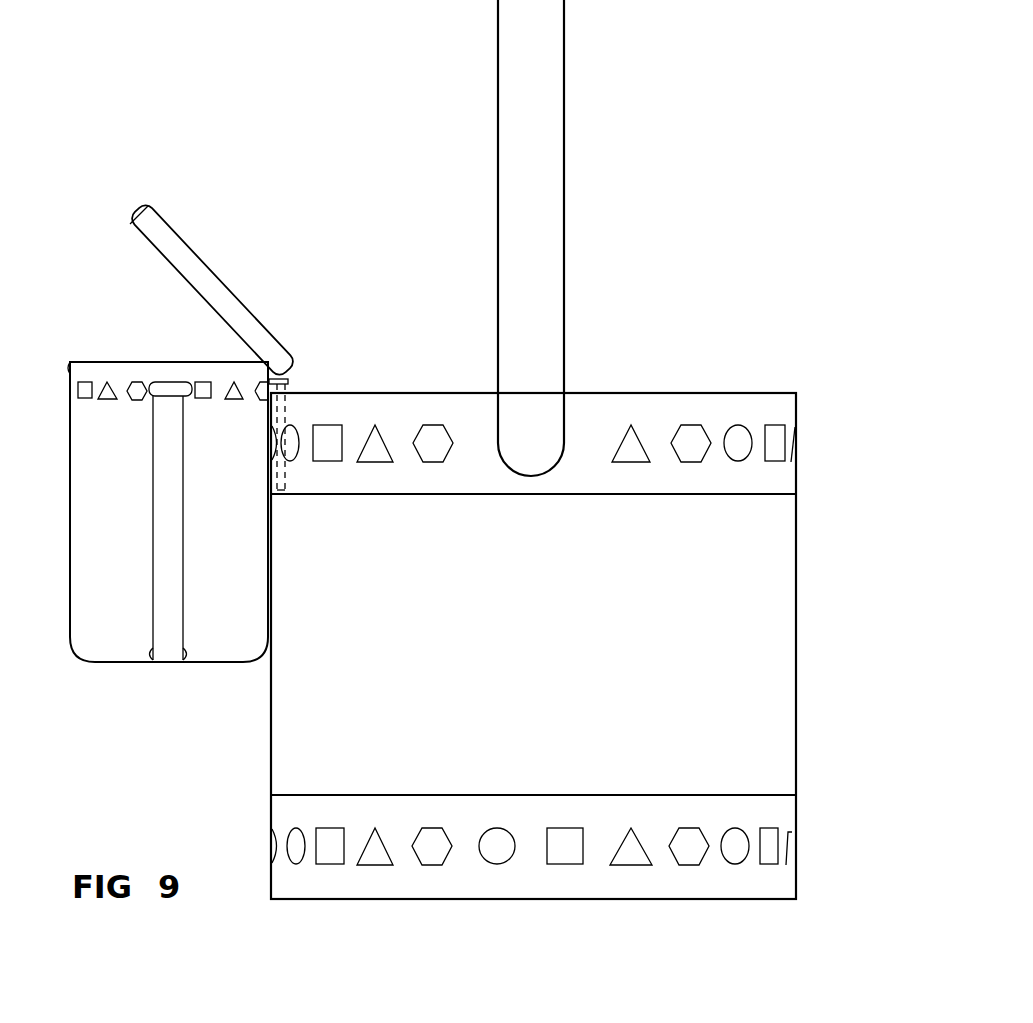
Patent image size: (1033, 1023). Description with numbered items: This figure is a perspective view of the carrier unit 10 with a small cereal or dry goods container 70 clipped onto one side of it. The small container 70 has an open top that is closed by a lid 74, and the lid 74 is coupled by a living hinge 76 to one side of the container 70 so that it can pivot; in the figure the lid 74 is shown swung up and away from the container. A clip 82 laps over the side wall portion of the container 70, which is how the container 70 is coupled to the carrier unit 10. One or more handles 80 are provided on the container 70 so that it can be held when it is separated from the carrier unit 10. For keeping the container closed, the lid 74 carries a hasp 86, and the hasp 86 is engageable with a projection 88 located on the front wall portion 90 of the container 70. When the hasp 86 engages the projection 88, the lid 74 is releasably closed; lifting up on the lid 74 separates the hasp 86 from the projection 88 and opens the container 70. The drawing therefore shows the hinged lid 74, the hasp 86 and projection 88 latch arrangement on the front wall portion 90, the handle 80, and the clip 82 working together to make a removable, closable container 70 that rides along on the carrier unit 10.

The carrier unit 10 is at (262, 714).
The small container 70 is at (58, 590).
The lid 74 is at (232, 297).
The living hinge 76 is at (284, 381).
The handle 80 is at (153, 613).
The clip 82 is at (287, 478).
The hasp 86 is at (129, 226).
The projection 88 is at (70, 368).
The front wall portion 90 is at (70, 512).